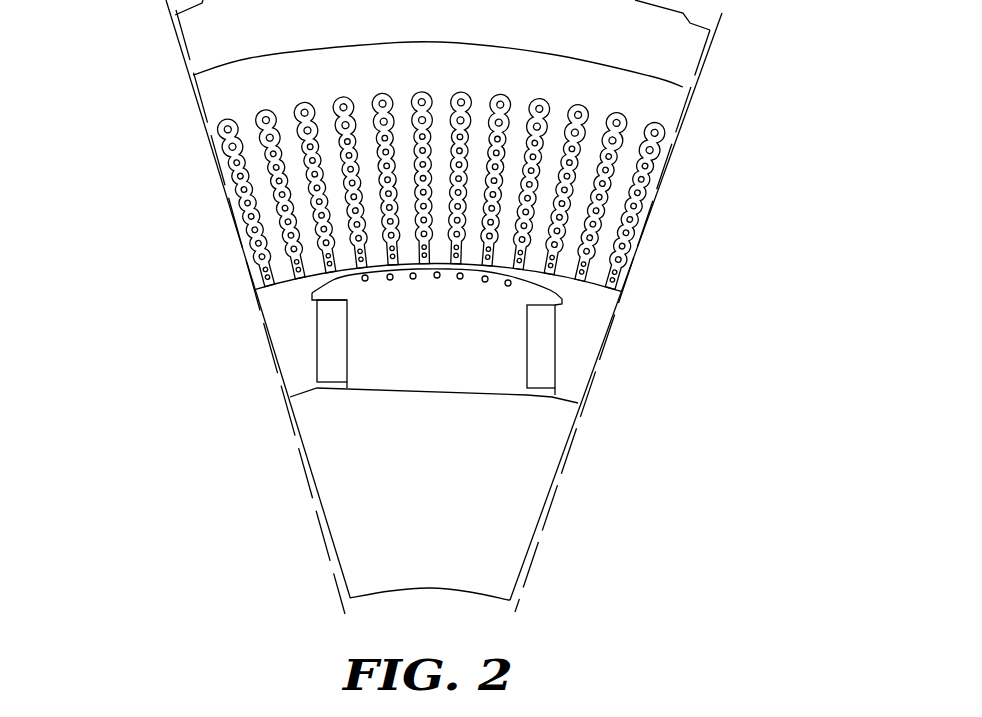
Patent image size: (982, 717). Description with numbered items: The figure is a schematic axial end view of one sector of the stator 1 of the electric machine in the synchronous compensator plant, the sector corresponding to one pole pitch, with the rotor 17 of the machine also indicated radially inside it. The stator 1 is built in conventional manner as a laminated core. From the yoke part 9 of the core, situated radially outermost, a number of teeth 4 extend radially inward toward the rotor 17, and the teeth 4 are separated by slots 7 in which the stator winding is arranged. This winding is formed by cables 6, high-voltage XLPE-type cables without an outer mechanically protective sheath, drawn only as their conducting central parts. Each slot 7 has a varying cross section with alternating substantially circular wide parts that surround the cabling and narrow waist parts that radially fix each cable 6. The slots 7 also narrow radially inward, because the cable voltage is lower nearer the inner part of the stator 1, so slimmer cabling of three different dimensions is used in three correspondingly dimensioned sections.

The stator 1 is at (696, 173).
The teeth 4 is at (272, 222).
The cables 6 is at (632, 213).
The slots 7 is at (625, 245).
The yoke part 9 is at (187, 80).
The rotor 17 is at (543, 443).